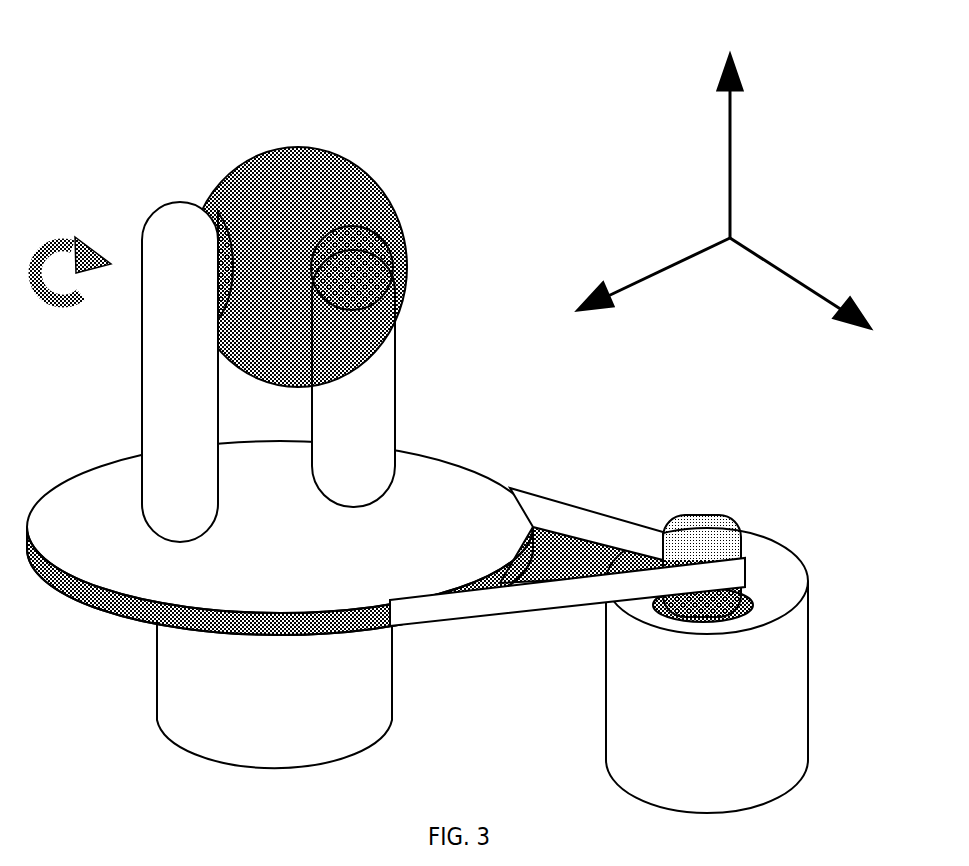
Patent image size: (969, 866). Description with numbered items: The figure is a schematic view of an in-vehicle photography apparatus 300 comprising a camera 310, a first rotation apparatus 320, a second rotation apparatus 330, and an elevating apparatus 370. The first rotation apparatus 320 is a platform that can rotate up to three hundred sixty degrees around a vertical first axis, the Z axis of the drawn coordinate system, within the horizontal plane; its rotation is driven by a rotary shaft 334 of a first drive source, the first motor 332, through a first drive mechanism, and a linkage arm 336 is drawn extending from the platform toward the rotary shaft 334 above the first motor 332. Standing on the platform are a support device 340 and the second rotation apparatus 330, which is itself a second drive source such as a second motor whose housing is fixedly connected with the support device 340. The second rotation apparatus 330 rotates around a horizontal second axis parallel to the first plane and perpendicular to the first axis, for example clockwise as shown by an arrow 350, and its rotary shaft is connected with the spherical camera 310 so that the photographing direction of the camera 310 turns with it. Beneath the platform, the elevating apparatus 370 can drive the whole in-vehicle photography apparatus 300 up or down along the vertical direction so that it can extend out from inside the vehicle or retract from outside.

The in-vehicle photography apparatus 300 is at (462, 409).
The camera 310 is at (366, 192).
The first rotation apparatus 320 is at (432, 468).
The second rotation apparatus 330 is at (228, 250).
The first motor 332 is at (787, 600).
The rotary shaft 334 is at (714, 523).
The linkage arm 336 is at (585, 523).
The support device 340 is at (366, 386).
The arrow 350 is at (62, 237).
The elevating apparatus 370 is at (373, 708).